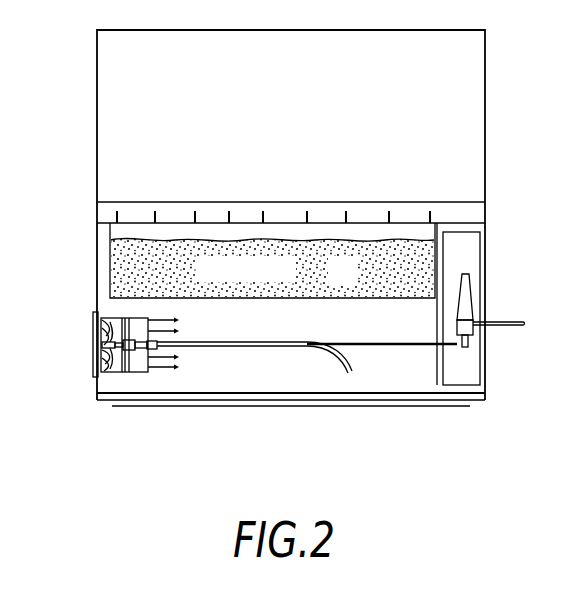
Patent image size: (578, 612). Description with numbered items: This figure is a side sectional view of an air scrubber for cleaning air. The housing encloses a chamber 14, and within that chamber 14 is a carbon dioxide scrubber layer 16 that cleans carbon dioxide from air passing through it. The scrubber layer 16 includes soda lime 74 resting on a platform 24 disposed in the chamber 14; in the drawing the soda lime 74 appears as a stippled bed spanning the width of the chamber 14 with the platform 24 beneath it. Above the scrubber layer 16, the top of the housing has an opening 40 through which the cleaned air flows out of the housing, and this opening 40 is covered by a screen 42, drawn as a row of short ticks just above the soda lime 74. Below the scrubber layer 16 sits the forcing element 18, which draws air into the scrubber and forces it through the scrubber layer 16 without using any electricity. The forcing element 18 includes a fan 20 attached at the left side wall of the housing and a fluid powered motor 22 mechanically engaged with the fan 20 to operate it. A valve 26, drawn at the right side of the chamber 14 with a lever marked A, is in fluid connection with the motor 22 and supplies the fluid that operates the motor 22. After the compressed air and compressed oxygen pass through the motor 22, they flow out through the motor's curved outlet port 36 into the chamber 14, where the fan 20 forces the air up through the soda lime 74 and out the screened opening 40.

The chamber 14 is at (393, 378).
The carbon dioxide scrubber layer 16 is at (84, 269).
The forcing element 18 is at (129, 424).
The fan 20 is at (82, 348).
The fluid powered motor 22 is at (160, 350).
The platform 24 is at (252, 318).
The valve 26 is at (465, 292).
The outlet port 36 is at (333, 356).
The opening 40 is at (126, 202).
The screen 42 is at (284, 222).
The soda lime 74 is at (354, 283).
The valve lever A is at (524, 323).